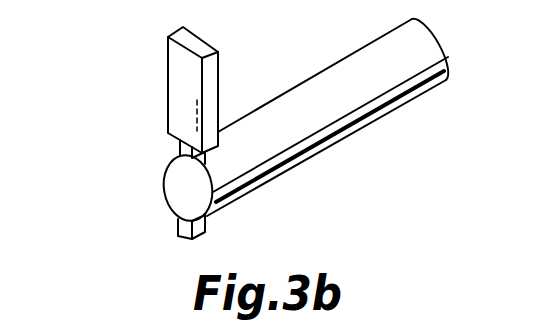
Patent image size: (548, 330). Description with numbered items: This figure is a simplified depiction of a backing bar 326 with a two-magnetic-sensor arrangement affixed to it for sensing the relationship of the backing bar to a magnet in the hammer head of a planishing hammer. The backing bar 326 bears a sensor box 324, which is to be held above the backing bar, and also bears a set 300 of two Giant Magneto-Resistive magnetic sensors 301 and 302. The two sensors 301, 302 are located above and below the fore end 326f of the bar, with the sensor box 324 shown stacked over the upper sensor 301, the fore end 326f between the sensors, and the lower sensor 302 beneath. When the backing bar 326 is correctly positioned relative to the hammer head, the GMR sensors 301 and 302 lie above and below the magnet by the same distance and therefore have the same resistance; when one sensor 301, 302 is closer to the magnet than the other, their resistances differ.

The set of two Giant Magneto-Resistive magnetic sensors 300 is at (126, 285).
The sensor box 324 is at (168, 90).
The GMR magnetic sensor 301 is at (180, 147).
The fore end of the bar 326f is at (166, 201).
The GMR magnetic sensor 302 is at (178, 236).
The backing bar 326 is at (434, 88).